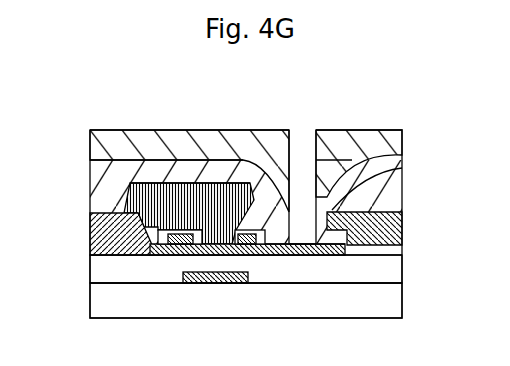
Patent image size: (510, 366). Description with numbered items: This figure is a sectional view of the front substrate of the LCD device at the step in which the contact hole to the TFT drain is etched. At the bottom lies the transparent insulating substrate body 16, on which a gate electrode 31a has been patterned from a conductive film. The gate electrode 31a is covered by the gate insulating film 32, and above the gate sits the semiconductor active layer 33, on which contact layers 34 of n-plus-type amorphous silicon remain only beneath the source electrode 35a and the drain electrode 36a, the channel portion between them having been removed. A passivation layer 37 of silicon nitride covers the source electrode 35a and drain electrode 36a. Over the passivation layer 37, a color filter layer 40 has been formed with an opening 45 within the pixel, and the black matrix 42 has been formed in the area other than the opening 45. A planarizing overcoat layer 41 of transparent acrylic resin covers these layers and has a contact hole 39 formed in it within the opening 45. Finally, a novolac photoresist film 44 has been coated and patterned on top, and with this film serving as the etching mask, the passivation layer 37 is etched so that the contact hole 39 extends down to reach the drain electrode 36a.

The transparent insulating substrate body 16 is at (100, 303).
The gate electrode 31a is at (183, 278).
The gate insulating film 32 is at (386, 270).
The semiconductor active layer 33 is at (245, 256).
The contact layer 34 is at (188, 183).
The source electrode 35a is at (200, 253).
The drain electrode 36a is at (305, 257).
The passivation layer 37 is at (403, 247).
The contact hole 39 is at (290, 178).
The color filter layer 40 is at (256, 205).
The overcoat layer 41 is at (248, 205).
The black matrix 42 is at (218, 188).
The novolac photoresist film 44 is at (250, 160).
The opening 45 is at (313, 213).